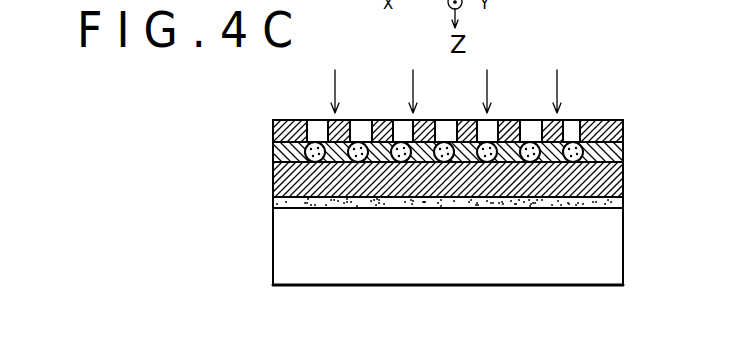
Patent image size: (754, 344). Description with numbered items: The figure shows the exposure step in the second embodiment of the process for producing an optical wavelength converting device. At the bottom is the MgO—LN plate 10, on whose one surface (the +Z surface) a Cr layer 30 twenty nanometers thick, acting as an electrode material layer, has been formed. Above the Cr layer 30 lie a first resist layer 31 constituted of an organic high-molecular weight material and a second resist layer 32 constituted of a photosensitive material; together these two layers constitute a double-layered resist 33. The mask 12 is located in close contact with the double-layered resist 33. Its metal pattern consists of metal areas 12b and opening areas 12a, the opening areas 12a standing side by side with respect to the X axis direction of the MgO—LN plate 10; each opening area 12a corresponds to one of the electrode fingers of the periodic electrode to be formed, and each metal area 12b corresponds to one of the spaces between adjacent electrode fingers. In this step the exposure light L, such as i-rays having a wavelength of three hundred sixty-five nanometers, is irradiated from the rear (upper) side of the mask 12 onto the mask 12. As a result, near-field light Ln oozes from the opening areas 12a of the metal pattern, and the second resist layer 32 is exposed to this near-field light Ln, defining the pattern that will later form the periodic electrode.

The MgO—LN plate 10 is at (640, 250).
The mask 12 is at (635, 119).
The opening areas 12a is at (568, 128).
The metal areas 12b is at (514, 130).
The Cr layer 30 is at (625, 203).
The first resist layer 31 is at (626, 177).
The second resist layer 32 is at (626, 150).
The double-layered resist 33 is at (486, 161).
The exposure light L is at (335, 84).
The near-field light Ln is at (318, 154).